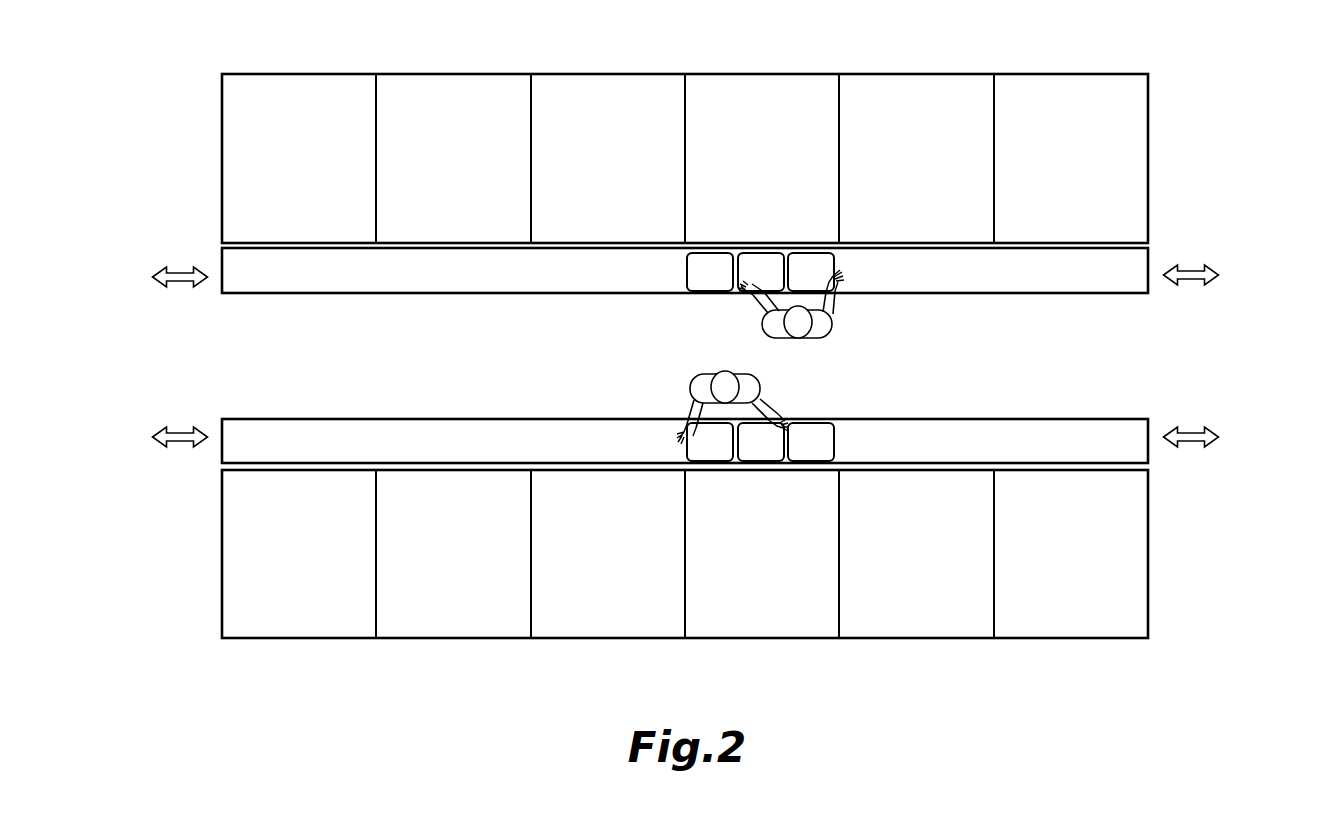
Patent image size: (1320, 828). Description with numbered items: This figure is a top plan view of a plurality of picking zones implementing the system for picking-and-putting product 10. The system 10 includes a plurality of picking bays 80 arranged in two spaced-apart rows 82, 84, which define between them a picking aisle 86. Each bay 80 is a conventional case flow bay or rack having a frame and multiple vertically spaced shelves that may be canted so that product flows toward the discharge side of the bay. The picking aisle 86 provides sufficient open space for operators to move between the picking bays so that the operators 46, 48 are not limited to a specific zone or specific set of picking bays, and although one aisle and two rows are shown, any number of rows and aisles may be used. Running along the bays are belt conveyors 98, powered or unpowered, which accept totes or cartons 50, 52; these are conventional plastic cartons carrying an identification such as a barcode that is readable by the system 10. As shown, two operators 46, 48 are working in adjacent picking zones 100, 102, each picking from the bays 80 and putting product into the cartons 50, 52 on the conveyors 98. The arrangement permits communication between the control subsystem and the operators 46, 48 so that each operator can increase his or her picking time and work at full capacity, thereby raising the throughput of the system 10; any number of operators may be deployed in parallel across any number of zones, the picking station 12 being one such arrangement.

The system for picking-and-putting product 10 is at (170, 84).
The picking station 12 is at (1220, 207).
The operator 46 is at (690, 388).
The operator 48 is at (833, 322).
The tote or carton 50 is at (819, 418).
The tote or carton 52 is at (707, 299).
The picking bay 80 is at (305, 73).
The row of picking bays 82 is at (217, 561).
The row of picking bays 84 is at (217, 150).
The picking aisle 86 is at (312, 369).
The belt conveyor 98 is at (221, 258).
The picking zone 100 is at (1088, 416).
The picking zone 102 is at (1088, 299).